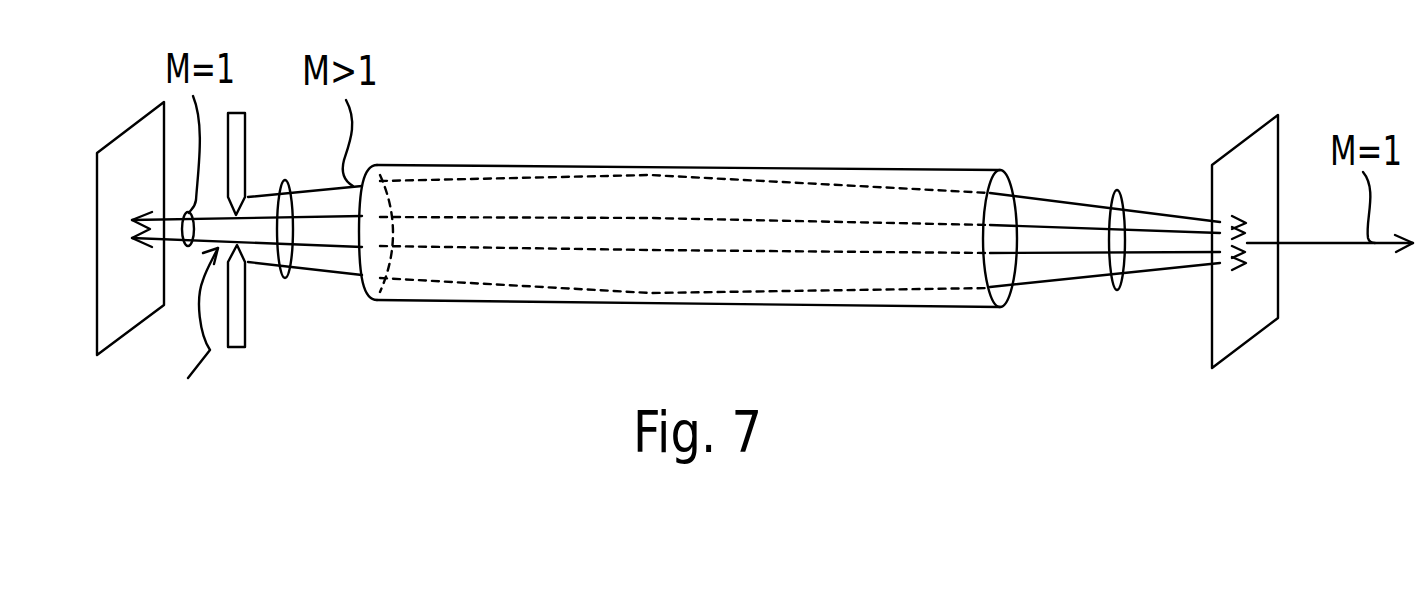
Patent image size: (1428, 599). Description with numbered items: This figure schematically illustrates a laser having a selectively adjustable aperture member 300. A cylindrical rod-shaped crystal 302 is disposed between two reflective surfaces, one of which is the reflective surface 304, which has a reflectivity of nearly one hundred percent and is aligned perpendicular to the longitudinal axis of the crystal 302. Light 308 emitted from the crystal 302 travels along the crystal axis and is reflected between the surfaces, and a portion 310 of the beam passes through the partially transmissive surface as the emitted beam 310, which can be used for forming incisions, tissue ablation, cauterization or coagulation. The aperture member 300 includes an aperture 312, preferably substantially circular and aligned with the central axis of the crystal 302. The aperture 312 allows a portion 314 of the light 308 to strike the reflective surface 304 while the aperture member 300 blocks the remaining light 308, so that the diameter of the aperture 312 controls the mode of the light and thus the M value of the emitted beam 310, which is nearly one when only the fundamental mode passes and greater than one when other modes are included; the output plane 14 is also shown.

The output plane / image plane 14 is at (1245, 140).
The selectively adjustable aperture member 300 is at (246, 318).
The cylindrical rod-shaped crystal 302 is at (700, 168).
The reflective surface 304 is at (99, 147).
The light 308 is at (285, 181).
The emitted beam 310 is at (1322, 247).
The aperture 312 is at (177, 328).
The portion of the light 314 is at (190, 248).